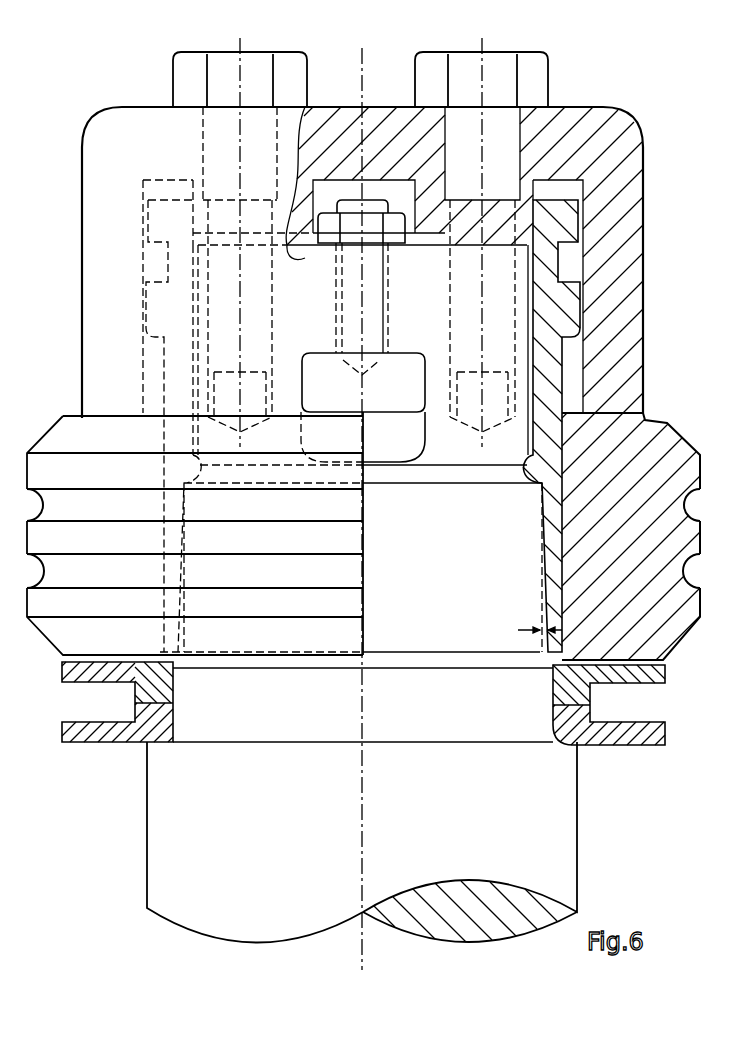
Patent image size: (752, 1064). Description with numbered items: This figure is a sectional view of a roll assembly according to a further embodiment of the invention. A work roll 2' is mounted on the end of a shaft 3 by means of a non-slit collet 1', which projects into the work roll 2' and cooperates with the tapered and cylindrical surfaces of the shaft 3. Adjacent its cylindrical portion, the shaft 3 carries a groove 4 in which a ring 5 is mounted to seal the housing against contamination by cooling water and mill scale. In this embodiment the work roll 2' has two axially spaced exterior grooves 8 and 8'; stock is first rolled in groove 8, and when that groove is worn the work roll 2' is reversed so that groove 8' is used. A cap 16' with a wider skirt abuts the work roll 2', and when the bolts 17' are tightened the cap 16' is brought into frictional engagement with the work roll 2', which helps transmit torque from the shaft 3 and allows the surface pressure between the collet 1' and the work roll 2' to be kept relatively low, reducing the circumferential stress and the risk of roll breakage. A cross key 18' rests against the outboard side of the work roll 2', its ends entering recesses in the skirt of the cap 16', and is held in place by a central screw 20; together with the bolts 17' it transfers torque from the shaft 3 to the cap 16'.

The cap 16' is at (362, 233).
The bolts 17' is at (364, 229).
The central screw 20 is at (347, 205).
The cross key 18' is at (495, 360).
The collet 1' is at (417, 426).
The work roll 2' is at (370, 536).
The groove 8 is at (374, 505).
The groove 8' is at (376, 571).
The ring 5 is at (100, 728).
The groove 4 is at (503, 710).
The shaft 3 is at (182, 835).